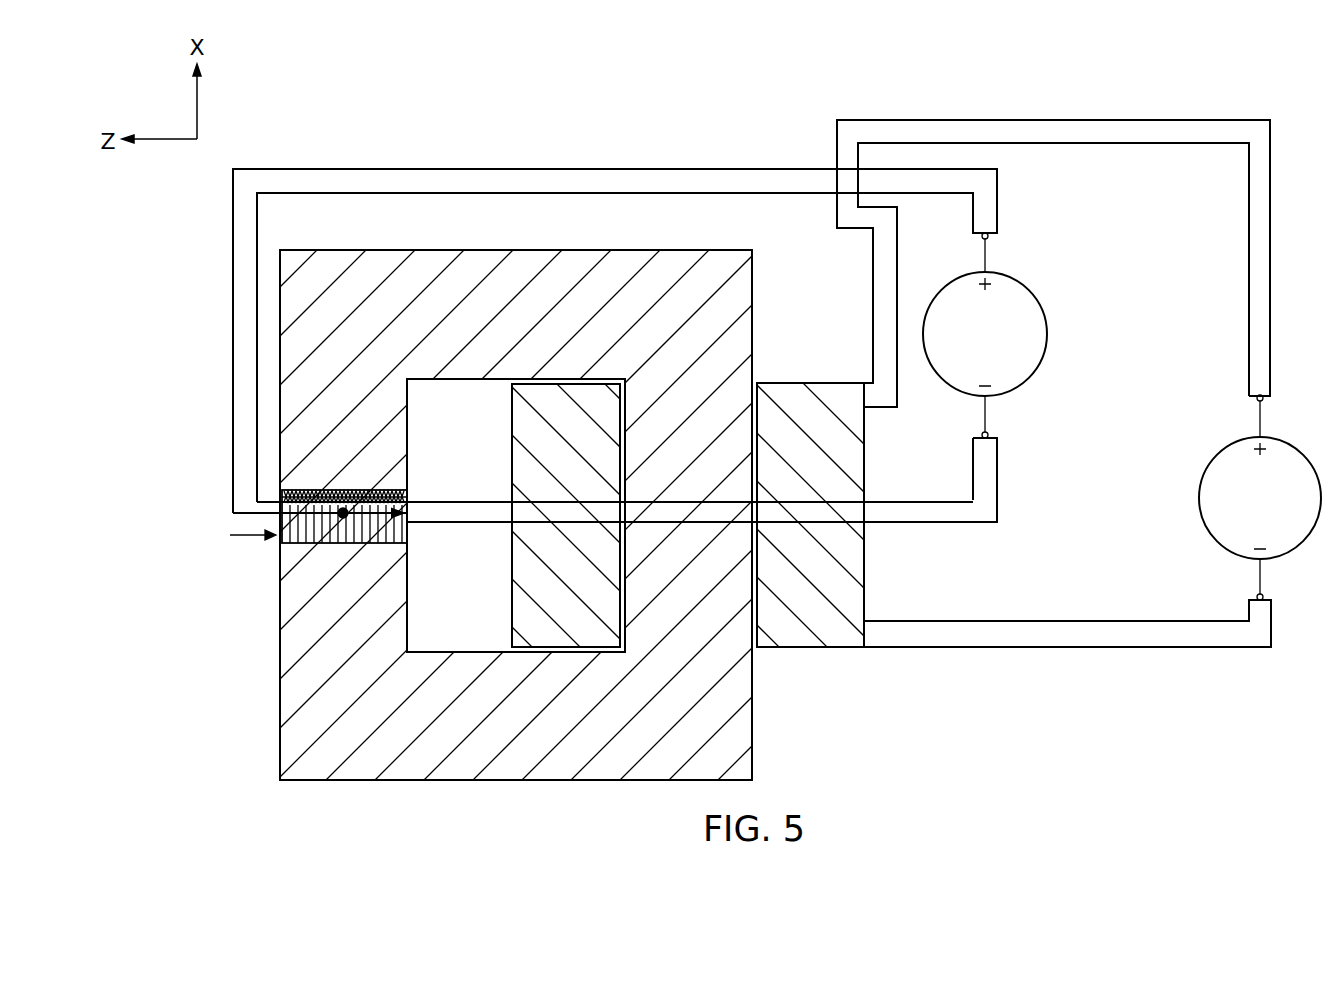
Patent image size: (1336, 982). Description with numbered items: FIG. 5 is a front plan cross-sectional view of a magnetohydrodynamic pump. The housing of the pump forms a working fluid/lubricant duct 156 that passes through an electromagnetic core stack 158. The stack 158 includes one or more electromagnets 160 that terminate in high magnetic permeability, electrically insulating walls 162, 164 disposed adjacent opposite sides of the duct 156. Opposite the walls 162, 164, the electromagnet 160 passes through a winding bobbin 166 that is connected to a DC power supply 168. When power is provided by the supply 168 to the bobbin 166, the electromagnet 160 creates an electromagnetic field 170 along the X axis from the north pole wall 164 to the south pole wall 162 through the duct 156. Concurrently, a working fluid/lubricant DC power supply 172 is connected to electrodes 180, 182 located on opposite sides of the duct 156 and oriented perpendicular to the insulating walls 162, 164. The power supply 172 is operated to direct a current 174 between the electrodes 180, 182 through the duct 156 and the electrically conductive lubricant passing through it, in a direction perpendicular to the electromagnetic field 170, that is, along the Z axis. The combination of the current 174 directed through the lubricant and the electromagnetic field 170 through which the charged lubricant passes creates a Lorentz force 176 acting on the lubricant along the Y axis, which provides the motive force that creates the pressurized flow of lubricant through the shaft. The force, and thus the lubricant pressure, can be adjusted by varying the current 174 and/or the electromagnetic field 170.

The working fluid/lubricant duct 156 is at (230, 536).
The electromagnetic core stack 158 is at (518, 249).
The electromagnet 160 is at (437, 250).
The south pole wall 162 is at (292, 491).
The north pole wall 164 is at (300, 545).
The winding bobbin 166 is at (807, 648).
The DC power supply 168 is at (1199, 498).
The electromagnetic field 170 is at (283, 512).
The working fluid/lubricant DC power supply 172 is at (1047, 334).
The current 174 is at (408, 512).
The Lorentz force 176 is at (341, 519).
The electrode 180 is at (282, 517).
The electrode 182 is at (410, 532).